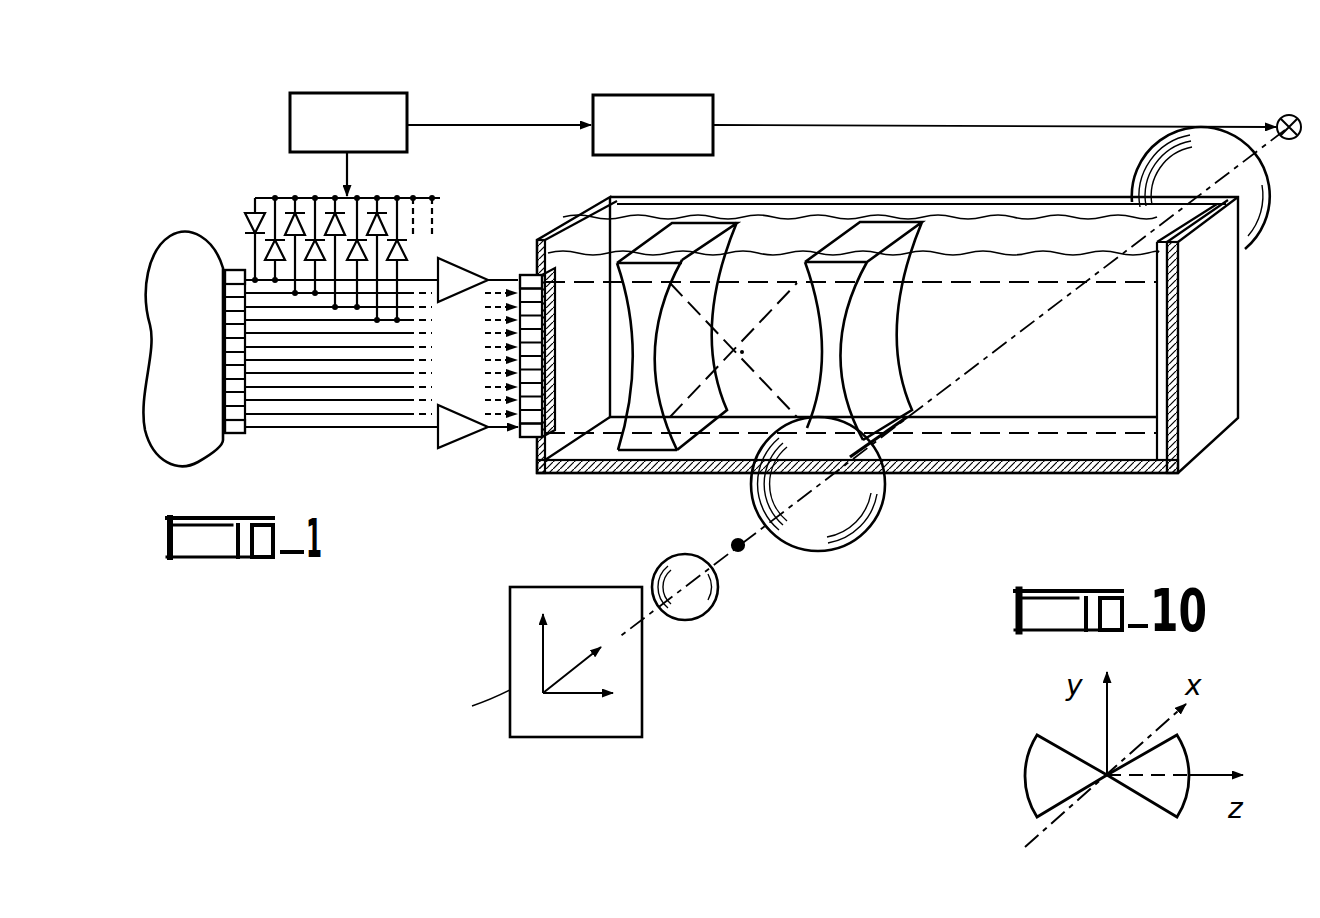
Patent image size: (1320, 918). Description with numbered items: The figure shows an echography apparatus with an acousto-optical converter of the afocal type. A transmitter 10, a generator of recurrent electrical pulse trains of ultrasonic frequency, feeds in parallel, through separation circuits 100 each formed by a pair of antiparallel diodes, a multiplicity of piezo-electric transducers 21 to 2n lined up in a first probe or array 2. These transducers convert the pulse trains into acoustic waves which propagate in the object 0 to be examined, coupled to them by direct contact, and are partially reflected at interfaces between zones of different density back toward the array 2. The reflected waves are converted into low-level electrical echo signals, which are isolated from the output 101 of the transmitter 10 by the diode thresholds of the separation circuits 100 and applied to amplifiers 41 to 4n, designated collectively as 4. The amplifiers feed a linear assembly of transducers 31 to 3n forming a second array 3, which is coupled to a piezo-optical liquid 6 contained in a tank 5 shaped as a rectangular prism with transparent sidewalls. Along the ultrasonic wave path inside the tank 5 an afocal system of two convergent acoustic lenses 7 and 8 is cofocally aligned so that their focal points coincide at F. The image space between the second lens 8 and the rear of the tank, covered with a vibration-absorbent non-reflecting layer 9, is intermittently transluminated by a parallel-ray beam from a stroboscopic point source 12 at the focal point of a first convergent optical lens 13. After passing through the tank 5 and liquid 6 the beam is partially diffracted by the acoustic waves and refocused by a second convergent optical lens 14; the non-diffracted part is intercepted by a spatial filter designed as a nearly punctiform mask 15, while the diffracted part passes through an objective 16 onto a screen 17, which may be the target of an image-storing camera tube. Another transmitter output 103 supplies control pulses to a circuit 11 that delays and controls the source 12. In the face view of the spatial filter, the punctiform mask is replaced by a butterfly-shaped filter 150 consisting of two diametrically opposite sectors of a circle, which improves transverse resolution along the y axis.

In FIG. 1, the object to be examined 0 is at (178, 232).
In FIG. 1, the first probe or array 2 is at (252, 434).
In FIG. 1, the piezo-electric transducer 21 is at (233, 270).
In FIG. 1, the piezo-electric transducer 2n is at (240, 434).
In FIG. 1, the second probe or array 3 is at (530, 270).
In FIG. 1, the transducer 31 is at (519, 275).
In FIG. 1, the transducer 3n is at (522, 440).
In FIG. 1, the amplifiers 4 is at (460, 302).
In FIG. 1, the amplifier 41 is at (470, 244).
In FIG. 1, the amplifier 4n is at (465, 448).
In FIG. 1, the tank 5 is at (1040, 196).
In FIG. 1, the piezo-optical liquid 6 is at (1060, 389).
In FIG. 1, the convergent acoustic lens 7 is at (706, 233).
In FIG. 1, the convergent acoustic lens 8 is at (881, 233).
In FIG. 1, the non-reflecting layer 9 is at (1152, 452).
In FIG. 1, the transmitter 10 is at (290, 102).
In FIG. 1, the circuit 11 is at (713, 150).
In FIG. 1, the stroboscopic point source 12 is at (1275, 117).
In FIG. 1, the first convergent optical lens 13 is at (1135, 181).
In FIG. 1, the second convergent optical lens 14 is at (760, 511).
In FIG. 1, the spatial filter 15 is at (732, 541).
In FIG. 1, the lens or objective 16 is at (660, 566).
In FIG. 1, the screen 17 is at (509, 618).
In FIG. 1, the separation circuits 100 is at (377, 191).
In FIG. 1, the output 101 is at (352, 168).
In FIG. 1, the transmitter output 103 is at (428, 124).
In FIG. 1, the focal point F is at (745, 352).
In FIG. 10, the butterfly-shaped filter 150 is at (1030, 748).